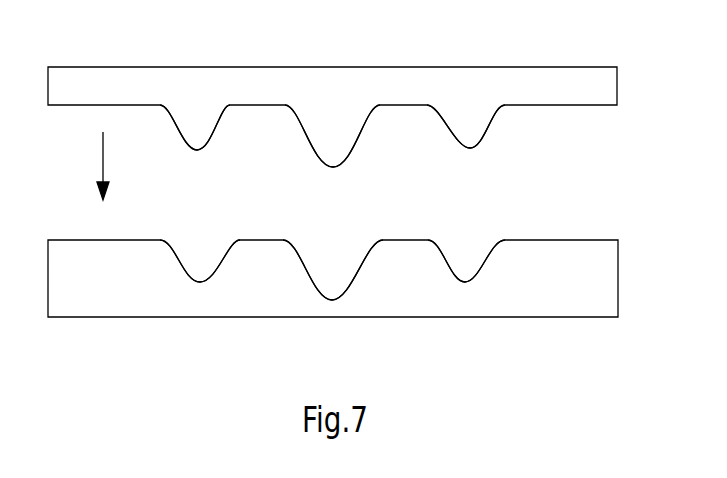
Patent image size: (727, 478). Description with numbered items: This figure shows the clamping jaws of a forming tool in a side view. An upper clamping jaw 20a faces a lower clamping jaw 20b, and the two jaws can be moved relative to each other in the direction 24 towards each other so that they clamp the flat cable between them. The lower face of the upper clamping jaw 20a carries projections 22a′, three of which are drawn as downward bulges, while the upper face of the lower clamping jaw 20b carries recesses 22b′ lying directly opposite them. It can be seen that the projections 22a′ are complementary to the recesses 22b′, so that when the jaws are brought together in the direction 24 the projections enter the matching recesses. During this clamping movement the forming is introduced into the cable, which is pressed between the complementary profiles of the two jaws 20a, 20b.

The clamping jaw 20a is at (556, 78).
The clamping jaw 20b is at (553, 303).
The direction 24 is at (101, 155).
The projection 22a′ is at (197, 137).
The recess 22b′ is at (206, 252).